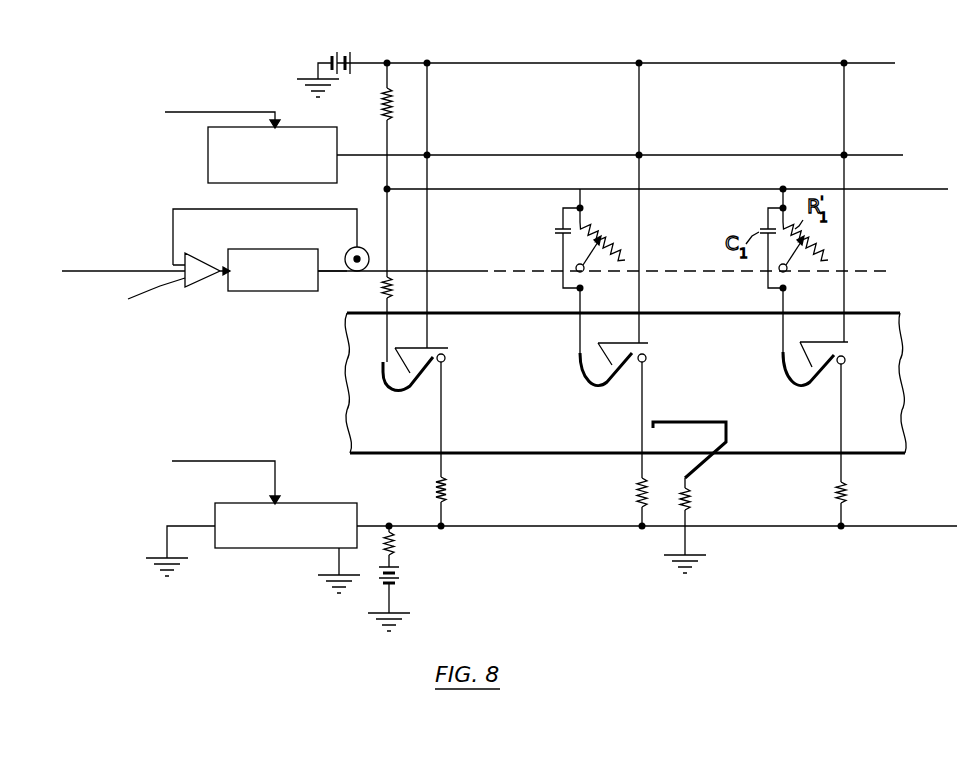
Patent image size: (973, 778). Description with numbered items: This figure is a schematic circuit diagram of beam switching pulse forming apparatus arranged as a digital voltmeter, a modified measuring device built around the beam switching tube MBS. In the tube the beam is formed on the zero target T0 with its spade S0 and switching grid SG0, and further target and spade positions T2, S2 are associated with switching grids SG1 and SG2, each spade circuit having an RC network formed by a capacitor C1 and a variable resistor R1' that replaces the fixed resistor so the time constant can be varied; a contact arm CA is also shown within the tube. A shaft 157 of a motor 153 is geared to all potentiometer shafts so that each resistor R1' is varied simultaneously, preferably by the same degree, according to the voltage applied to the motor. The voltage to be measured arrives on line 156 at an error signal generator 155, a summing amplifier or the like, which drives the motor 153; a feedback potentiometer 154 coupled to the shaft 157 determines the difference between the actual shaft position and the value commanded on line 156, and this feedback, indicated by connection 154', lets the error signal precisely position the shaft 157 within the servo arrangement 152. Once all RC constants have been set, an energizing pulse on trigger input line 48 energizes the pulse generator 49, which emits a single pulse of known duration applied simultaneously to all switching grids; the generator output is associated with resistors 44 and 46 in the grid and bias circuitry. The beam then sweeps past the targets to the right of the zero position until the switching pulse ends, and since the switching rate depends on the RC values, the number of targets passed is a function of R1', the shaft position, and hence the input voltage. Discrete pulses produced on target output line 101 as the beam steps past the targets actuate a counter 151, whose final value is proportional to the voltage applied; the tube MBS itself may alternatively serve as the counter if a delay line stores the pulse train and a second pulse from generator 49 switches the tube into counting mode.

The counter 151 is at (208, 167).
The servo drive assembly 152 is at (198, 277).
The motor 153 is at (228, 291).
The feedback potentiometer 154 is at (347, 246).
The feedback connection 154' is at (265, 235).
The error signal generator 155 is at (203, 245).
The line 156 is at (85, 269).
The shaft 157 is at (345, 273).
The target output line 101 is at (664, 159).
The trigger input line 48 is at (218, 462).
The pulse generator 49 is at (319, 503).
The resistor 44 is at (458, 484).
The resistor 46 is at (396, 546).
The contact arm CA is at (695, 471).
The tube MBS is at (849, 456).
The spring contact S0 is at (392, 386).
The spring contact S2 is at (790, 376).
The terminal T0 is at (436, 347).
The terminal T2 is at (822, 344).
The spark gap SG0 is at (445, 360).
The spark gap SG1 is at (646, 360).
The spark gap SG2 is at (845, 362).
The capacitor C1 is at (556, 232).
The variable resistor R1' is at (600, 232).